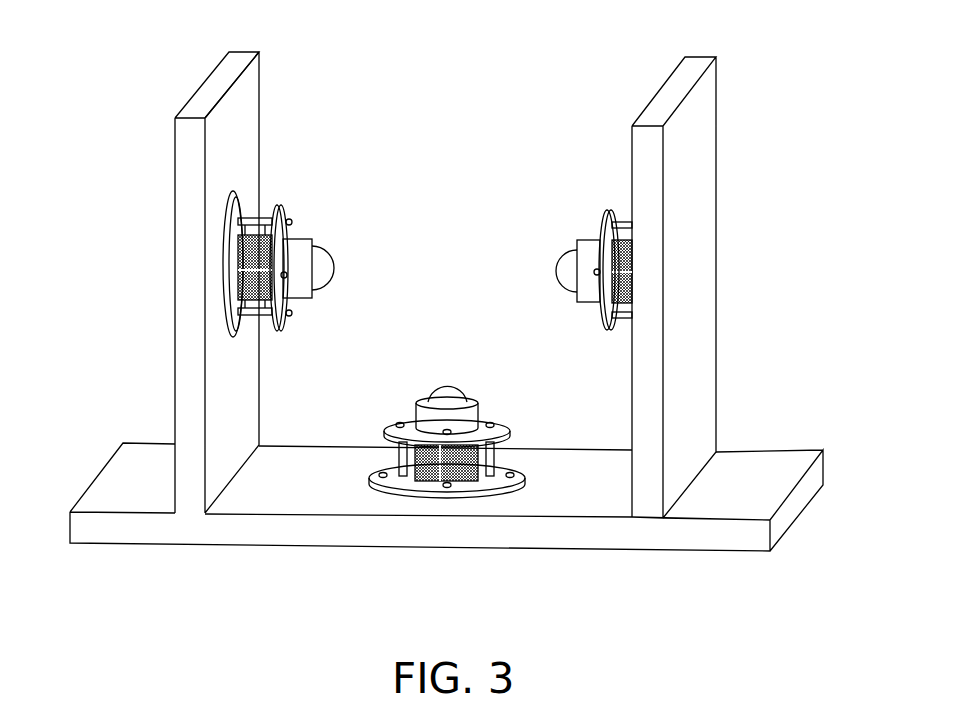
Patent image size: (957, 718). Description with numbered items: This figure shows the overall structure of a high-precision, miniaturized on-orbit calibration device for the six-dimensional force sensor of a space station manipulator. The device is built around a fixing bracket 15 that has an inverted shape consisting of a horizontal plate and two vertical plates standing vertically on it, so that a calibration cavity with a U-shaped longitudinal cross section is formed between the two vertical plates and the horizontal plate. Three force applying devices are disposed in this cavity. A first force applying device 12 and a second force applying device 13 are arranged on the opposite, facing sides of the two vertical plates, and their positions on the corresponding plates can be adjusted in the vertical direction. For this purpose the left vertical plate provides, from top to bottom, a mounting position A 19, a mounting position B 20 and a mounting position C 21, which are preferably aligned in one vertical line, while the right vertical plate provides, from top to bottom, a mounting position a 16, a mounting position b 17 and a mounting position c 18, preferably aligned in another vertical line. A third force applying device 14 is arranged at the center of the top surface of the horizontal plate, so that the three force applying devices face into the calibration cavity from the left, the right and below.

The first force applying device 12 is at (287, 206).
The second force applying device 13 is at (603, 222).
The third force applying device 14 is at (422, 482).
The fixing bracket 15 is at (153, 478).
The mounting position a 16 is at (687, 183).
The mounting position b 17 is at (688, 275).
The mounting position c 18 is at (688, 363).
The mounting position A 19 is at (233, 177).
The mounting position B 20 is at (235, 275).
The mounting position C 21 is at (232, 362).